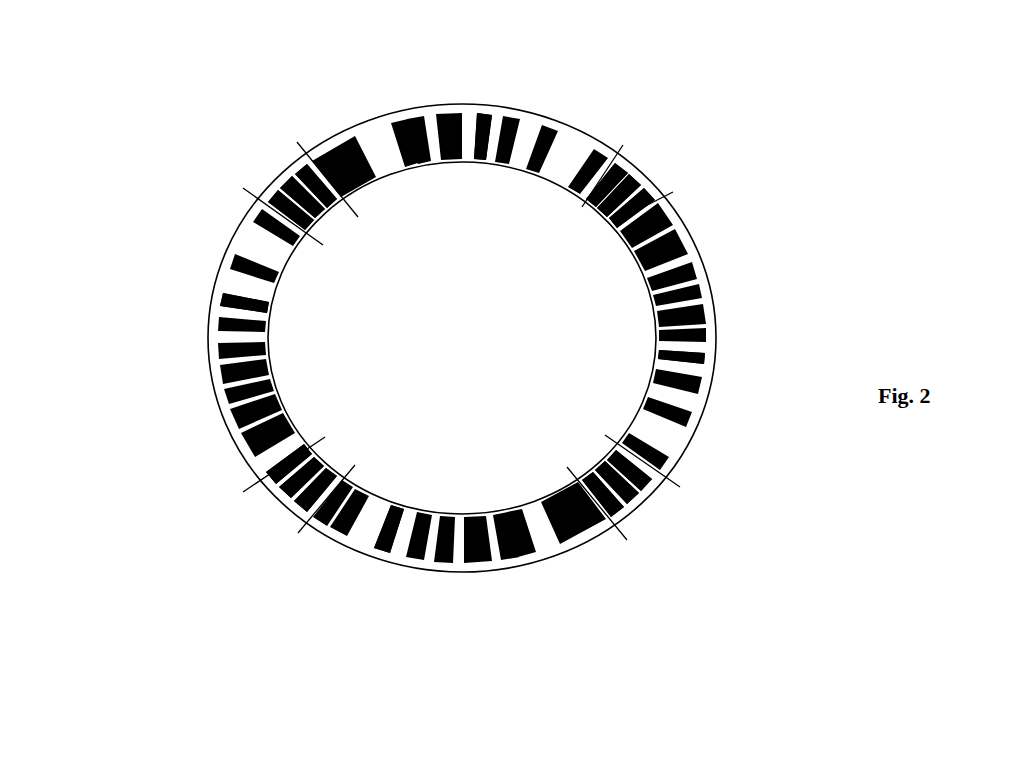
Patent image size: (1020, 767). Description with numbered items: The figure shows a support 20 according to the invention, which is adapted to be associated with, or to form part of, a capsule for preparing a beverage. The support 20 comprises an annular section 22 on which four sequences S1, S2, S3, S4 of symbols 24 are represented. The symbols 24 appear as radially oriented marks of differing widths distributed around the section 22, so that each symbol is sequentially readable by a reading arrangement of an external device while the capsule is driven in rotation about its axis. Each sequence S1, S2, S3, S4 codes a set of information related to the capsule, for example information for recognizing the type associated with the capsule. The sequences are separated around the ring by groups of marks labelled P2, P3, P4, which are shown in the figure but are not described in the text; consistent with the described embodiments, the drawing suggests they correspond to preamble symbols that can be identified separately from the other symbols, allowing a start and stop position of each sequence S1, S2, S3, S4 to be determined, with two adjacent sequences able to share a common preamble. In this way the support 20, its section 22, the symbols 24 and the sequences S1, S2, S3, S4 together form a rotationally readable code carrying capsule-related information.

The support 20 is at (113, 170).
The section 22 is at (717, 308).
The symbols 24 is at (442, 569).
The sequence S1 is at (490, 122).
The sequence S2 is at (697, 363).
The sequence S3 is at (370, 528).
The sequence S4 is at (253, 287).
The pattern sector P2 is at (605, 236).
The pattern sector P3 is at (323, 438).
The pattern sector P4 is at (283, 175).